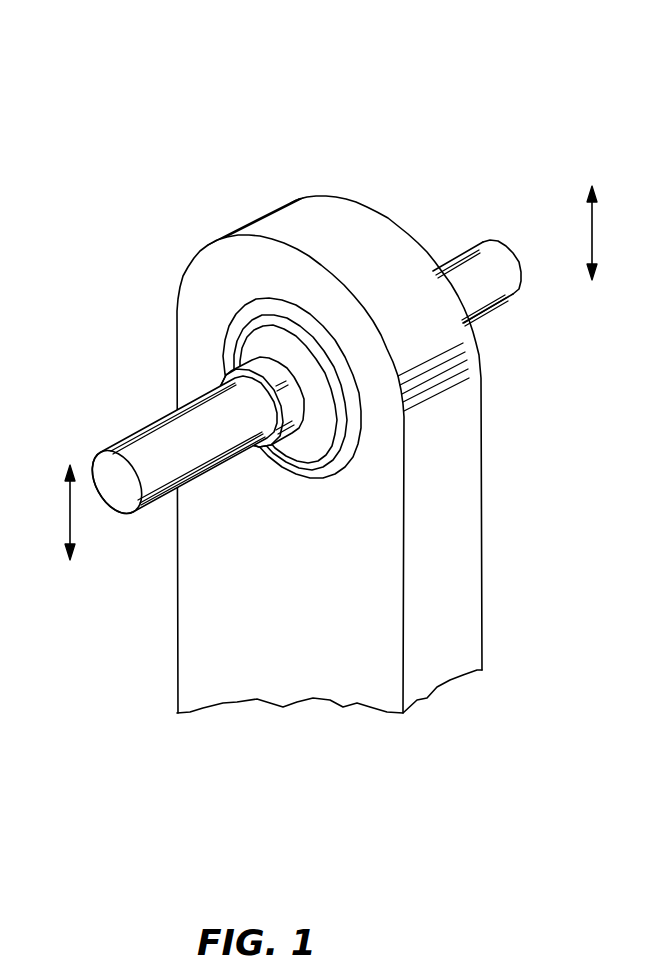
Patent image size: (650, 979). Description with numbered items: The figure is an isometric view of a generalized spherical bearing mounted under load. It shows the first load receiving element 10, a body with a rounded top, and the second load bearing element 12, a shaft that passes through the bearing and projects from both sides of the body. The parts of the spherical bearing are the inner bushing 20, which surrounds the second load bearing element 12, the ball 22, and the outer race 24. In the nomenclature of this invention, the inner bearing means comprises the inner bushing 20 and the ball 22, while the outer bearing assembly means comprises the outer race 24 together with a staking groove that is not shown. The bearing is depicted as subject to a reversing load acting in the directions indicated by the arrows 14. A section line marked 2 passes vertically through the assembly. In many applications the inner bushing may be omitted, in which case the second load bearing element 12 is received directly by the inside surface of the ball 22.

The section line 2- 2 is at (262, 633).
The first load receiving element 10 is at (472, 553).
The second load bearing element 12 is at (150, 504).
The arrows 14 is at (70, 524).
The inner bushing 20 is at (223, 372).
The ball 22 is at (262, 346).
The outer race 24 is at (245, 305).